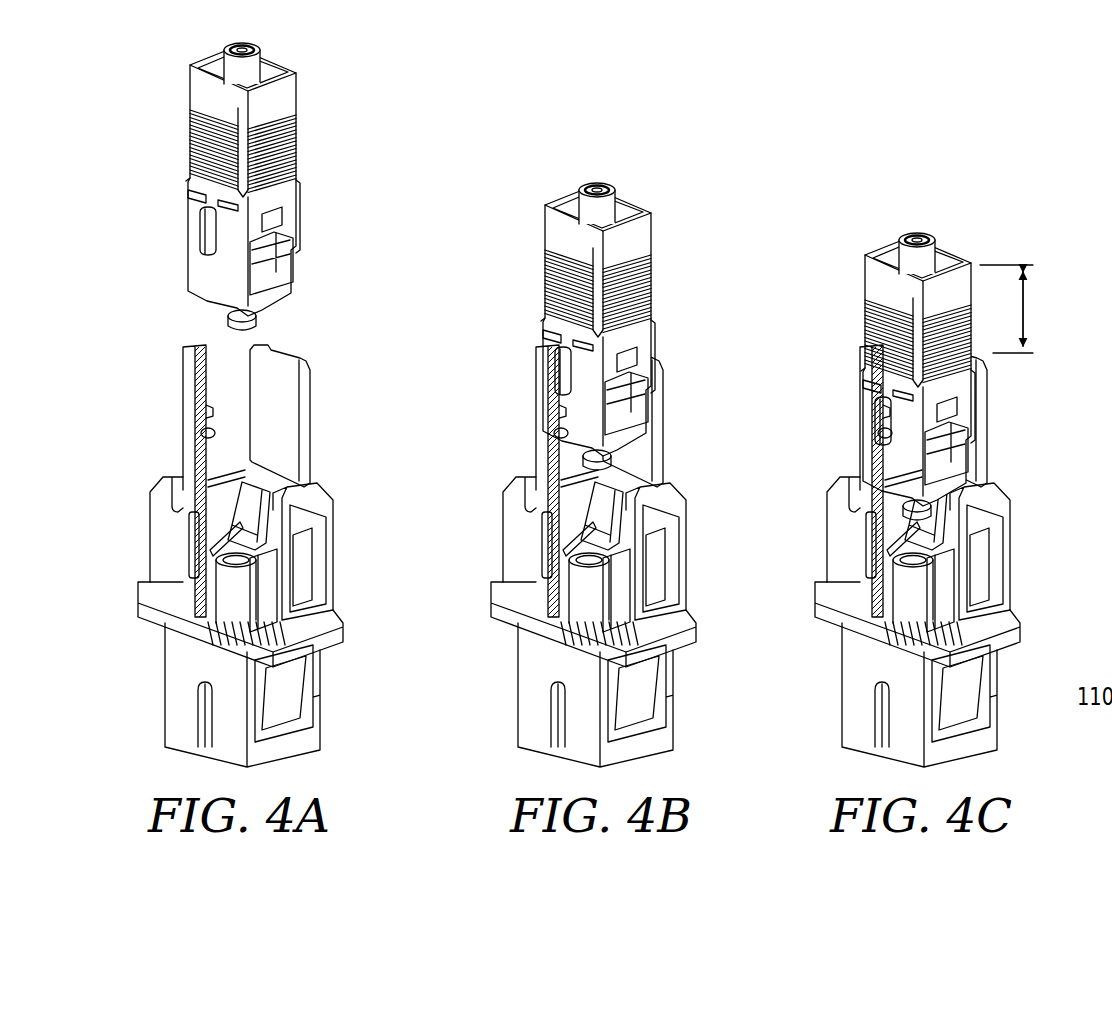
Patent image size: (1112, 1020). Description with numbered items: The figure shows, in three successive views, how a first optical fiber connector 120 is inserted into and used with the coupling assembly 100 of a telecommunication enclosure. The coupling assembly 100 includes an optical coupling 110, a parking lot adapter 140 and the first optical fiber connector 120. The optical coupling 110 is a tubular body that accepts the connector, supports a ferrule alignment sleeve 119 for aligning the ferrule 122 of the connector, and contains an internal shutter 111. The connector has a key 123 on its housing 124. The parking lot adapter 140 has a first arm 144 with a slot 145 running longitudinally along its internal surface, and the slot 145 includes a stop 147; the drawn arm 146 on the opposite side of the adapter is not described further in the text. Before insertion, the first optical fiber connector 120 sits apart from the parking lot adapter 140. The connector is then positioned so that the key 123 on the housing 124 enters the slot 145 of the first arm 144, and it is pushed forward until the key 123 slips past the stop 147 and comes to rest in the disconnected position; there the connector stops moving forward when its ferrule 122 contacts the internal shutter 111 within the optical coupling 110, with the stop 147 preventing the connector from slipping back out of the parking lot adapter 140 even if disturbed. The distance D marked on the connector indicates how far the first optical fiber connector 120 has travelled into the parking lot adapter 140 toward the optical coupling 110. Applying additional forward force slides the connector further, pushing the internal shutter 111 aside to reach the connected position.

In FIG. 4A, the coupling assembly 100 is at (355, 92).
In FIG. 4B, the coupling assembly 100 is at (663, 172).
In FIG. 4C, the coupling assembly 100 is at (983, 228).
In FIG. 4A, the optical coupling 110 is at (160, 677).
In FIG. 4B, the optical coupling 110 is at (507, 691).
In FIG. 4C, the optical coupling 110 is at (827, 673).
In FIG. 4A, the internal shutter 111 is at (250, 523).
In FIG. 4B, the internal shutter 111 is at (602, 516).
In FIG. 4C, the internal shutter 111 is at (937, 520).
In FIG. 4A, the ferrule alignment sleeve 119 is at (226, 539).
In FIG. 4B, the ferrule alignment sleeve 119 is at (560, 538).
In FIG. 4C, the ferrule alignment sleeve 119 is at (903, 539).
In FIG. 4A, the first optical fiber connector 120 is at (302, 134).
In FIG. 4B, the first optical fiber connector 120 is at (540, 237).
In FIG. 4C, the first optical fiber connector 120 is at (860, 283).
In FIG. 4A, the ferrule 122 is at (258, 322).
In FIG. 4B, the ferrule 122 is at (597, 460).
In FIG. 4C, the ferrule 122 is at (917, 510).
In FIG. 4A, the key 123 is at (207, 237).
In FIG. 4B, the key 123 is at (563, 371).
In FIG. 4C, the key 123 is at (882, 440).
In FIG. 4A, the housing 124 is at (196, 177).
In FIG. 4B, the housing 124 is at (568, 340).
In FIG. 4C, the housing 124 is at (888, 390).
In FIG. 4A, the parking lot adapter 140 is at (343, 582).
In FIG. 4B, the parking lot adapter 140 is at (703, 537).
In FIG. 4C, the parking lot adapter 140 is at (1023, 583).
In FIG. 4A, the first arm 144 is at (190, 376).
In FIG. 4B, the first arm 144 is at (535, 366).
In FIG. 4C, the first arm 144 is at (871, 481).
In FIG. 4A, the slot 145 is at (207, 443).
In FIG. 4B, the slot 145 is at (567, 580).
In FIG. 4C, the slot 145 is at (885, 433).
In FIG. 4A, the resilient tab 146 is at (300, 441).
In FIG. 4B, the resilient tab 146 is at (633, 416).
In FIG. 4C, the resilient tab 146 is at (985, 408).
In FIG. 4A, the stop 147 is at (210, 412).
In FIG. 4B, the stop 147 is at (558, 418).
In FIG. 4C, the stop 147 is at (870, 373).
In FIG. 4C, the insertion distance D is at (1023, 308).